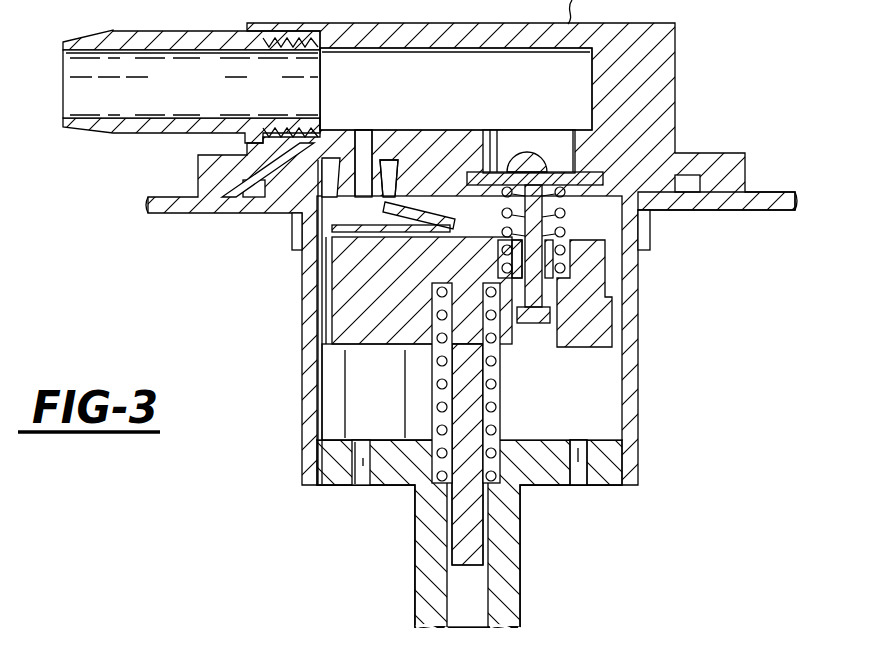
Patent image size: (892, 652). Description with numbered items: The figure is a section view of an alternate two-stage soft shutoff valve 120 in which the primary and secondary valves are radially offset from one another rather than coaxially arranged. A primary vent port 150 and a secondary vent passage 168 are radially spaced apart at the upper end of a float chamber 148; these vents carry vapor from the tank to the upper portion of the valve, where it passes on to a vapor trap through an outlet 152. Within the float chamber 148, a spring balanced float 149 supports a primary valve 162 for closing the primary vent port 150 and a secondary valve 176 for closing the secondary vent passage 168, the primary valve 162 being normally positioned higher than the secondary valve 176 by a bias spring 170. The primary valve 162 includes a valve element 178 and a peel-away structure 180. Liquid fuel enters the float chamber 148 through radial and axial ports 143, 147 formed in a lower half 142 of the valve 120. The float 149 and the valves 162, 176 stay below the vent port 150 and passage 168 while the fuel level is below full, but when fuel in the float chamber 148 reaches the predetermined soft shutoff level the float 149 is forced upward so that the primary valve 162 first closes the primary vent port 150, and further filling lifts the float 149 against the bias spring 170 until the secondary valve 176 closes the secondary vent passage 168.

The two-stage soft shutoff valve 120 is at (296, 279).
The lower half 142 is at (631, 419).
The radial port 143 is at (306, 337).
The axial port 147 is at (582, 472).
The float chamber 148 is at (606, 218).
The spring balanced float 149 is at (368, 336).
The primary vent port 150 is at (497, 133).
The outlet 152 is at (214, 97).
The primary valve 162 is at (623, 198).
The secondary vent passage 168 is at (362, 134).
The bias spring 170 is at (568, 252).
The secondary valve 176 is at (415, 192).
The valve element 178 is at (373, 214).
The peel-away structure 180 is at (437, 210).